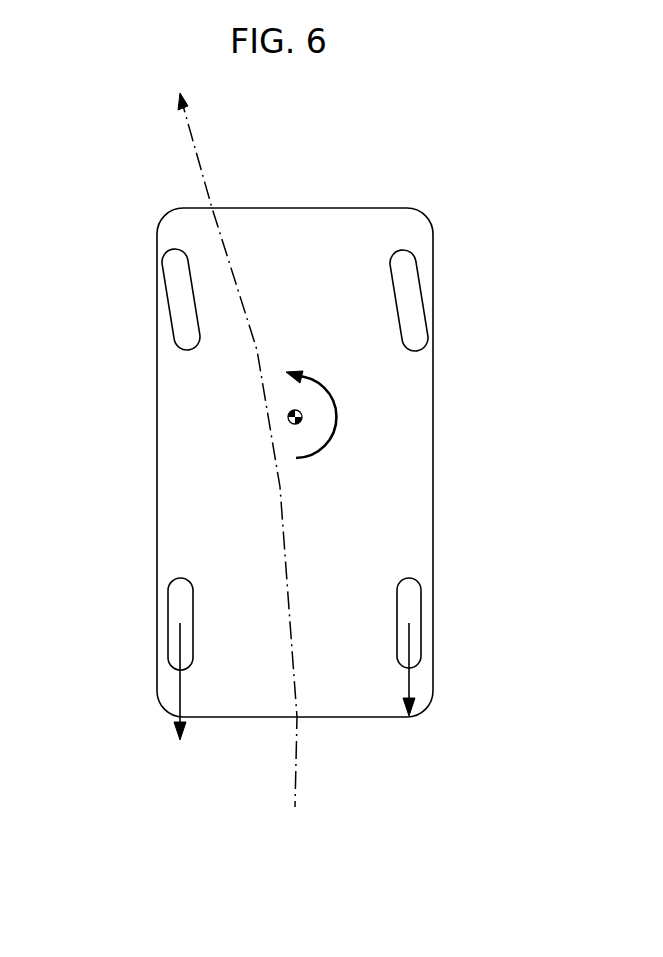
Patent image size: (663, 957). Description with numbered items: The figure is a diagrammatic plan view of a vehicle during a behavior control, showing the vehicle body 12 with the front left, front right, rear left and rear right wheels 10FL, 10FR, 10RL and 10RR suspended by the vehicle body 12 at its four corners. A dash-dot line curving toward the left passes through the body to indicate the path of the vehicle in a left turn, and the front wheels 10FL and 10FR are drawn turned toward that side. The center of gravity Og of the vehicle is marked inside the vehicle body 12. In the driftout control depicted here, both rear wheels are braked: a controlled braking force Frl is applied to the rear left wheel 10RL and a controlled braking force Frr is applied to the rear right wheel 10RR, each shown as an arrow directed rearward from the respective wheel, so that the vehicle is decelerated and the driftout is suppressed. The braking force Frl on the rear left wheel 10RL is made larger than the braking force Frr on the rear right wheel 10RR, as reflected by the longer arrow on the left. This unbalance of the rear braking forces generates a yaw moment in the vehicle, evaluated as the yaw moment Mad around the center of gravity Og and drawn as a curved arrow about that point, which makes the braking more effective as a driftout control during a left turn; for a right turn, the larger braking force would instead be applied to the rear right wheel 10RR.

The vehicle body 12 is at (433, 440).
The front left wheel 10FL is at (168, 293).
The front right wheel 10FR is at (420, 300).
The rear left wheel 10RL is at (168, 618).
The rear right wheel 10RR is at (420, 620).
The center of gravity Og is at (292, 422).
The yaw moment Mad is at (333, 428).
The braking force applied to the rear left wheel Frl is at (178, 685).
The braking force applied to the rear right wheel Frr is at (410, 685).